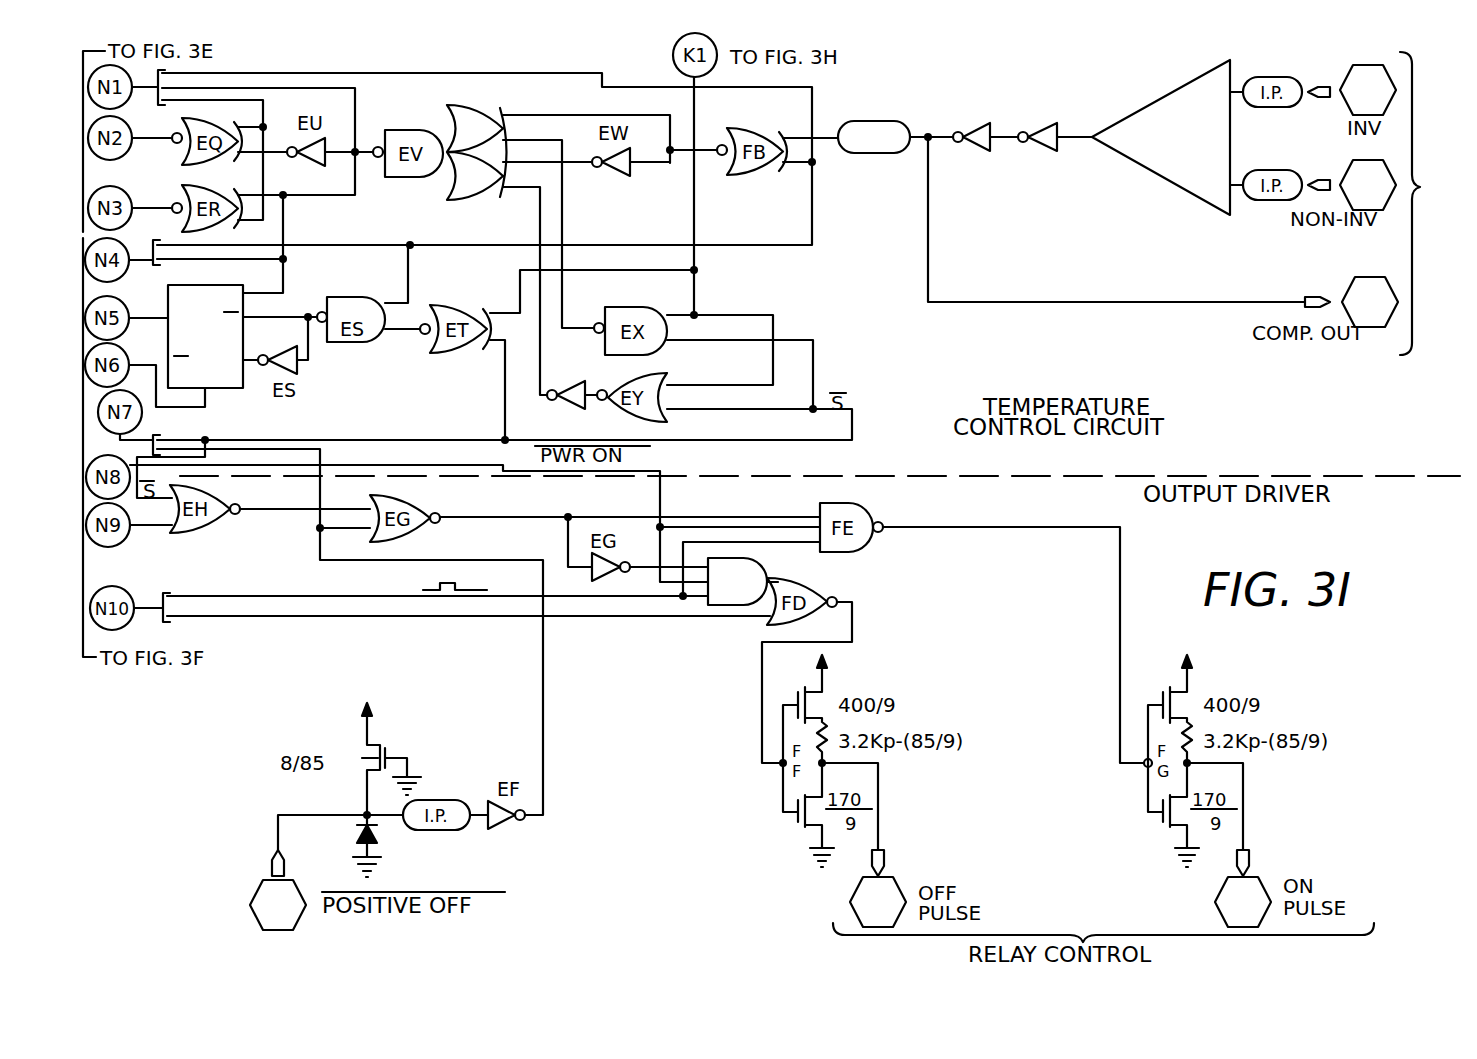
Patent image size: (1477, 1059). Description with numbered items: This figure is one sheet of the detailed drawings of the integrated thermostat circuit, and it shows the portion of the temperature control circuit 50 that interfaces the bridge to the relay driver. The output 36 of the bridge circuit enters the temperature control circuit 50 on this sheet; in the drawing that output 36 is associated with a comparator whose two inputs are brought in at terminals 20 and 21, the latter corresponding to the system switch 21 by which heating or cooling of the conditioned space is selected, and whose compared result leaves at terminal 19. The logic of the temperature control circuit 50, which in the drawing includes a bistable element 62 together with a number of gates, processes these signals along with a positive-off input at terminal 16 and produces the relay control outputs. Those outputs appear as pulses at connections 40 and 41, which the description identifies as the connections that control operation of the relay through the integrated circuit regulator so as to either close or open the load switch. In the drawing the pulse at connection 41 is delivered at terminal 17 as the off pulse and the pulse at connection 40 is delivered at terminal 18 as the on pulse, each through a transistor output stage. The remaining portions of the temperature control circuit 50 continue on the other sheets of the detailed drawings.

The positive off input terminal 16 is at (278, 890).
The off pulse output terminal 17 is at (856, 838).
The on pulse output terminal 18 is at (1221, 838).
The comparator output terminal 19 is at (1370, 302).
The non-inverting input terminal 20 is at (1368, 185).
The system switch 21 is at (1368, 90).
The output of bridge circuit 36 is at (1426, 203).
The output connection 40 is at (1215, 902).
The output connection 41 is at (897, 880).
The temperature control circuit 50 is at (1085, 355).
The flip-flop 62 is at (205, 337).